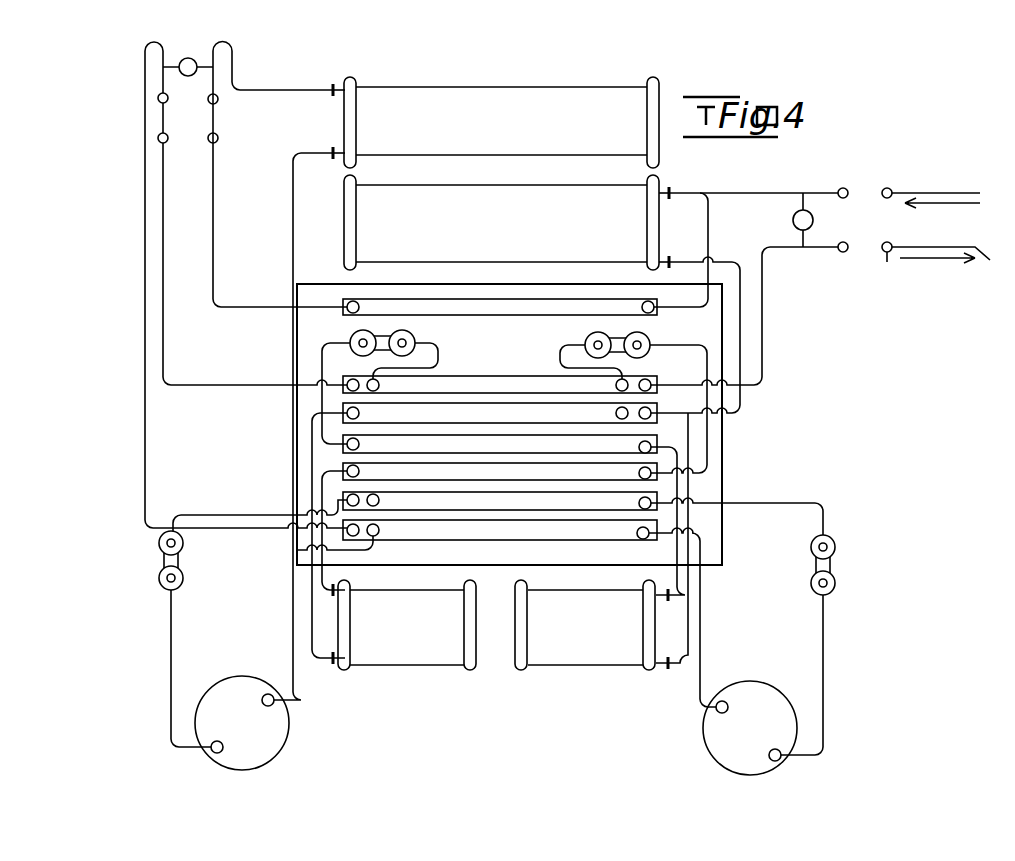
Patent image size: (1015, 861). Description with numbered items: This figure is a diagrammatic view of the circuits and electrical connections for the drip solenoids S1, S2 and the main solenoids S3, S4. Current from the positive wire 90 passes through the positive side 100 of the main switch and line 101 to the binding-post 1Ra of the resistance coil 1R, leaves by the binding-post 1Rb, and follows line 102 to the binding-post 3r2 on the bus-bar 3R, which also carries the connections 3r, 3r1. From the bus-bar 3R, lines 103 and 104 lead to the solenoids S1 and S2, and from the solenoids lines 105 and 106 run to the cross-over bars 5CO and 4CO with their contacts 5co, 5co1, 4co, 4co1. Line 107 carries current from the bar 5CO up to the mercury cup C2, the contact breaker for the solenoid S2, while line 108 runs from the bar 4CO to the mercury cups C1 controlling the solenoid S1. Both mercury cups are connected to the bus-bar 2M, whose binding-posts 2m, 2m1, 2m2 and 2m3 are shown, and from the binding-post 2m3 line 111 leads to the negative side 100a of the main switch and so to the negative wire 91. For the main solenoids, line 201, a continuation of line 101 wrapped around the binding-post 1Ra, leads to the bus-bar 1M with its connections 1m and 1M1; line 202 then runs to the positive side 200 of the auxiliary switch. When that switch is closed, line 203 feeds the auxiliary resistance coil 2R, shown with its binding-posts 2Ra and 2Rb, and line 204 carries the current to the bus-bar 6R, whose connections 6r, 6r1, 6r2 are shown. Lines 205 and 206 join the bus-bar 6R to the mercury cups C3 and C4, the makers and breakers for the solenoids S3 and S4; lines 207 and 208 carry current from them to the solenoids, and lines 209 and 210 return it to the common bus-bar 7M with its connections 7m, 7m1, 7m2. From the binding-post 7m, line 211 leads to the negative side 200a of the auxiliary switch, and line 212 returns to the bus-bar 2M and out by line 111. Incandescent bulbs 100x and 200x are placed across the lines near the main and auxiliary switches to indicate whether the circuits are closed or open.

The auxiliary resistance coil 2R is at (501, 122).
The terminal of coil 2R 2Ra is at (345, 80).
The terminal of coil 2R 2Rb is at (333, 150).
The resistance coil 1R is at (501, 222).
The binding post 1Ra is at (672, 190).
The binding-post 1Rb is at (679, 269).
The line 211 is at (145, 62).
The line 212 is at (163, 195).
The incandescent bulb 200x is at (188, 56).
The negative side of auxiliary switch 200a is at (158, 100).
The positive side of auxiliary switch 200 is at (218, 101).
The line 203 is at (255, 92).
The line 202 is at (225, 232).
The line 204 is at (293, 195).
The line 210 is at (293, 608).
The line 206 is at (225, 505).
The line 103 is at (310, 413).
The line 108 is at (345, 340).
The line 105 is at (333, 462).
The bus-bar 1M is at (500, 307).
The contact of relay 1M 1m is at (355, 300).
The contact of relay 1M 1M1 is at (654, 303).
The bus-bar 2M is at (500, 385).
The contact 2m is at (353, 378).
The contact 2m1 is at (379, 385).
The contact 2m2 is at (624, 378).
The binding-post 2m3 is at (651, 383).
The bus-bar 3R is at (500, 413).
The contact 3r is at (368, 415).
The contact 3r1 is at (616, 413).
The binding-post 3r2 is at (650, 410).
The cross-over bar 4CO is at (500, 444).
The cross-over bar 4co is at (359, 444).
The contact 4co1 is at (639, 447).
The cross-over bar 5CO is at (500, 472).
The cross-over bar 5co is at (359, 471).
The contact 5co1 is at (639, 473).
The bus-bar 6R is at (500, 501).
The contact 6r is at (350, 494).
The contact 6r1 is at (379, 500).
The contact 6r2 is at (639, 503).
The common bus-bar 7M is at (500, 530).
The binding-post 7m is at (344, 540).
The contact 7m1 is at (379, 533).
The contact 7m2 is at (640, 539).
The mercury-cups C1 is at (412, 333).
The mercury-cups C2 is at (646, 335).
The mercury-cups C3 is at (159, 562).
The mercury-cups C4 is at (835, 545).
The positive side of main switch 100 is at (438, 356).
The line 104 is at (560, 358).
The line 107 is at (700, 340).
The line 106 is at (677, 578).
The line 205 is at (783, 503).
The line 209 is at (700, 635).
The line 101 is at (775, 190).
The line 201 is at (710, 212).
The incandescent bulb 100x is at (823, 220).
The line 111 is at (838, 250).
The line 102 is at (740, 254).
The positive wire 90 is at (945, 193).
The negative connecting wire 91 is at (941, 258).
The negative side of main switch 100a is at (867, 267).
The drip solenoid S1 is at (404, 625).
The drip solenoid S2 is at (591, 625).
The main solenoid S3 is at (242, 723).
The main solenoid S4 is at (750, 728).
The line 208 is at (171, 643).
The line 207 is at (823, 690).